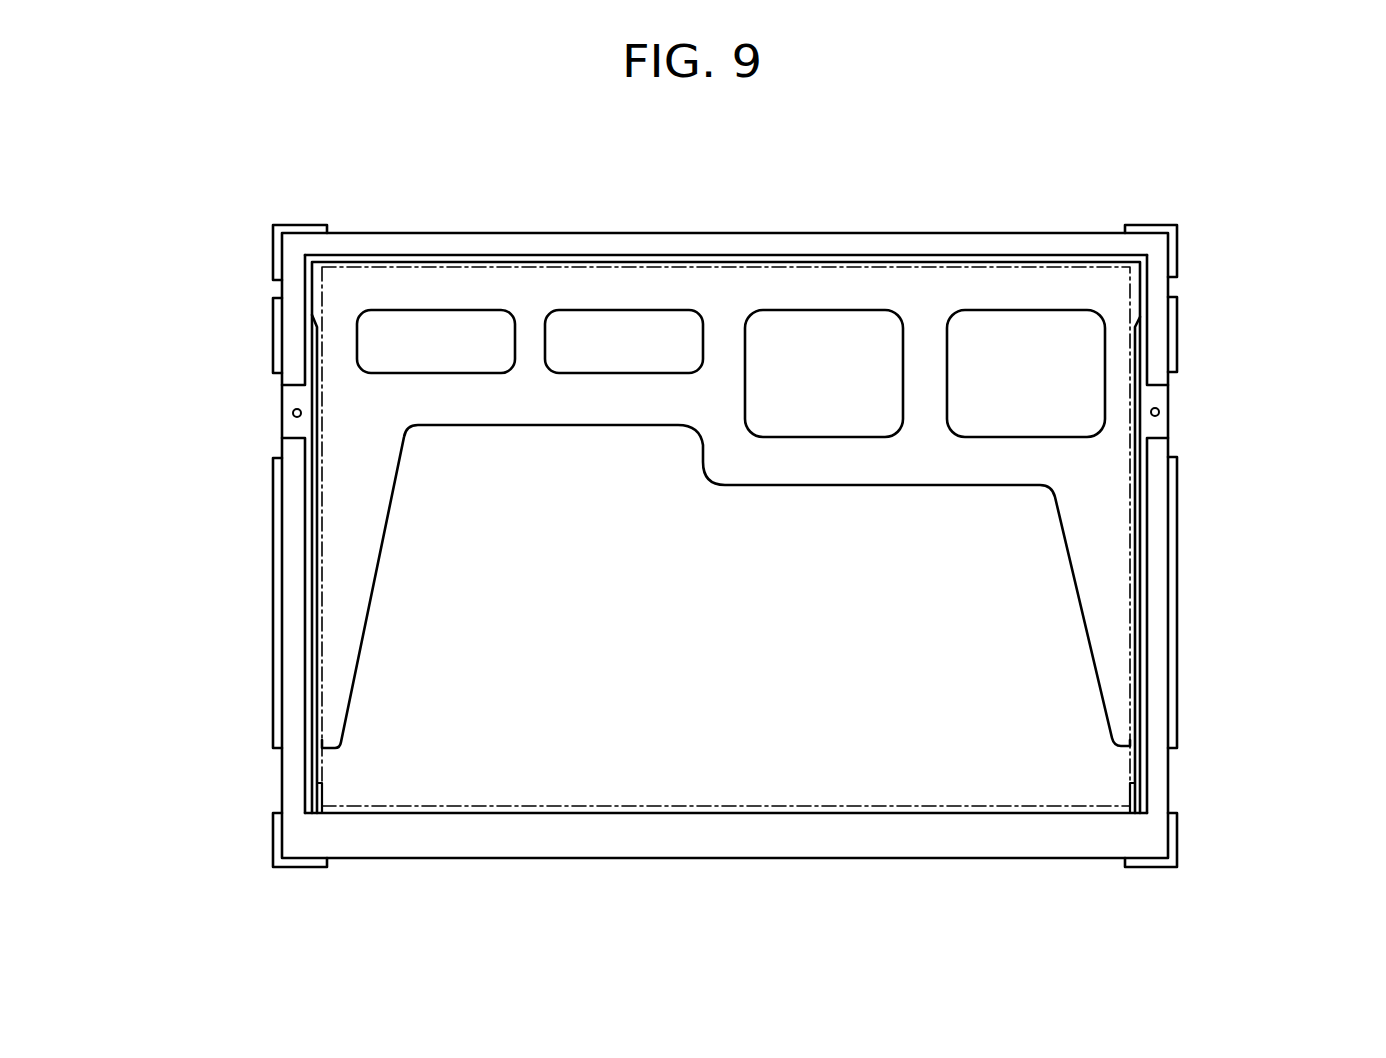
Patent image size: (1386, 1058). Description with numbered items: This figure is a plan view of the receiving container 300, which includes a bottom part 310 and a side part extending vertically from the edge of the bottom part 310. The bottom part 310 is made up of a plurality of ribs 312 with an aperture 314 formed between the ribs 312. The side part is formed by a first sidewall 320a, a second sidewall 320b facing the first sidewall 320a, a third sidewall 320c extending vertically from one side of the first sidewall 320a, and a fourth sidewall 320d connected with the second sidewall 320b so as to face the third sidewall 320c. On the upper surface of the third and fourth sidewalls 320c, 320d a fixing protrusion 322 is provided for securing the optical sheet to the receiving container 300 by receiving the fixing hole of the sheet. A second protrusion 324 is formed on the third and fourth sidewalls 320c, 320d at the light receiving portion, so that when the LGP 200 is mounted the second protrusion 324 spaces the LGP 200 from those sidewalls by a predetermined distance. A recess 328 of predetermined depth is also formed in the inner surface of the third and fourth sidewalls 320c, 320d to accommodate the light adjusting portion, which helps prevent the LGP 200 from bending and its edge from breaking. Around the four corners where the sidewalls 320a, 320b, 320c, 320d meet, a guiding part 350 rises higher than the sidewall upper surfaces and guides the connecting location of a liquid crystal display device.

The receiving container 300 is at (942, 210).
The guiding part 350 is at (278, 247).
The first sidewall 320a is at (735, 835).
The second sidewall 320b is at (735, 248).
The third sidewall 320c is at (298, 522).
The fourth sidewall 320d is at (1155, 475).
The fixing protrusion 322 is at (293, 413).
The second protrusion 324 is at (318, 795).
The recess 328 is at (320, 295).
The bottom part 310 is at (1317, 350).
The rib 312 is at (1083, 470).
The aperture 314 is at (1054, 365).
The LGP 200 is at (1130, 565).